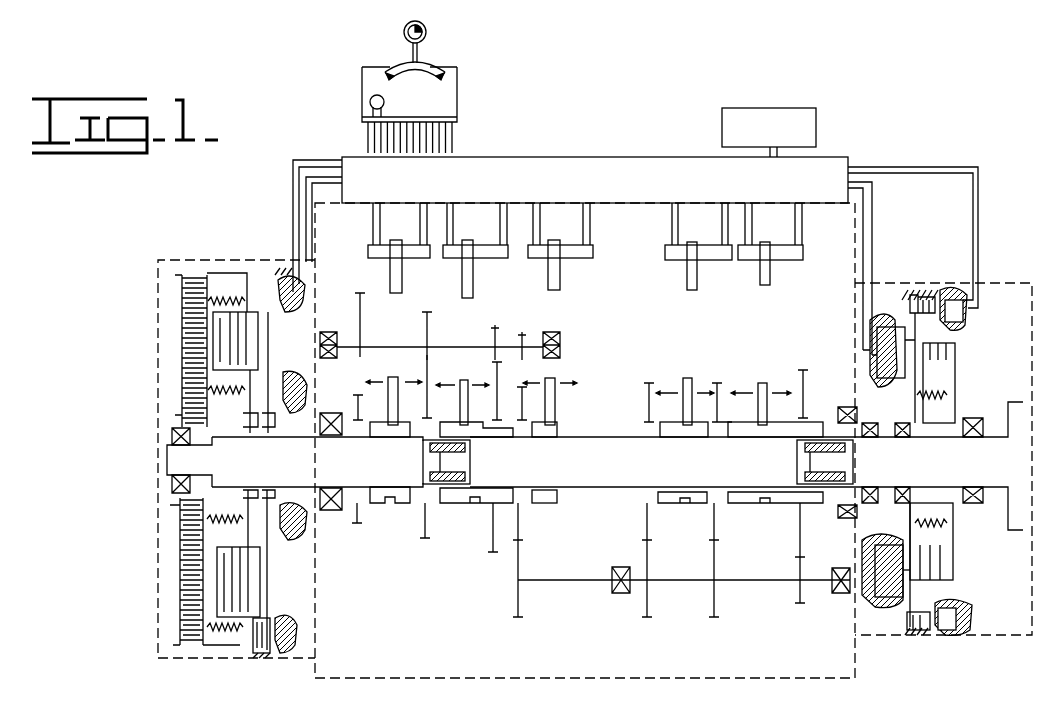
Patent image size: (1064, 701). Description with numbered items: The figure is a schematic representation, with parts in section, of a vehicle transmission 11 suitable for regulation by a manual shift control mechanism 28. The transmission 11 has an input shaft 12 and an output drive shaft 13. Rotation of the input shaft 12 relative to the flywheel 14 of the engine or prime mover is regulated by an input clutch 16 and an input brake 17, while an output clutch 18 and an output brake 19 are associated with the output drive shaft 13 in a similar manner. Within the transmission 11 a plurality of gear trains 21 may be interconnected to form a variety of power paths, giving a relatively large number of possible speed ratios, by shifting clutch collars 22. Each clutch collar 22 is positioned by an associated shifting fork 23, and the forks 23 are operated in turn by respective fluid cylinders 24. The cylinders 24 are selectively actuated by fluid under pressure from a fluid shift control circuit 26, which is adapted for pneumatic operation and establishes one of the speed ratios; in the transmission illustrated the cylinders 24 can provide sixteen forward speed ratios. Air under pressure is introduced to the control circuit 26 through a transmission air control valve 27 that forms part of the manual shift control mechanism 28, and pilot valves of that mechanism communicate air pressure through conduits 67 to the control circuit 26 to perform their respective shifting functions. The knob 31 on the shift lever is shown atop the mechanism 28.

The transmission 11 is at (883, 125).
The input shaft 12 is at (363, 473).
The output drive shaft 13 is at (940, 473).
The flywheel 14 is at (182, 367).
The input clutch 16 is at (262, 580).
The input brake 17 is at (257, 658).
The output clutch 18 is at (957, 562).
The output brake 19 is at (943, 640).
The gear trains 21 is at (423, 325).
The clutch collars 22 is at (383, 430).
The shifting fork 23 is at (390, 378).
The fluid cylinders 24 is at (405, 260).
The fluid shift control circuit 26 is at (663, 157).
The transmission air control valve 27 is at (368, 108).
The manual shift control mechanism 28 is at (413, 84).
The knob 31 is at (418, 53).
The conduits 67 is at (453, 140).